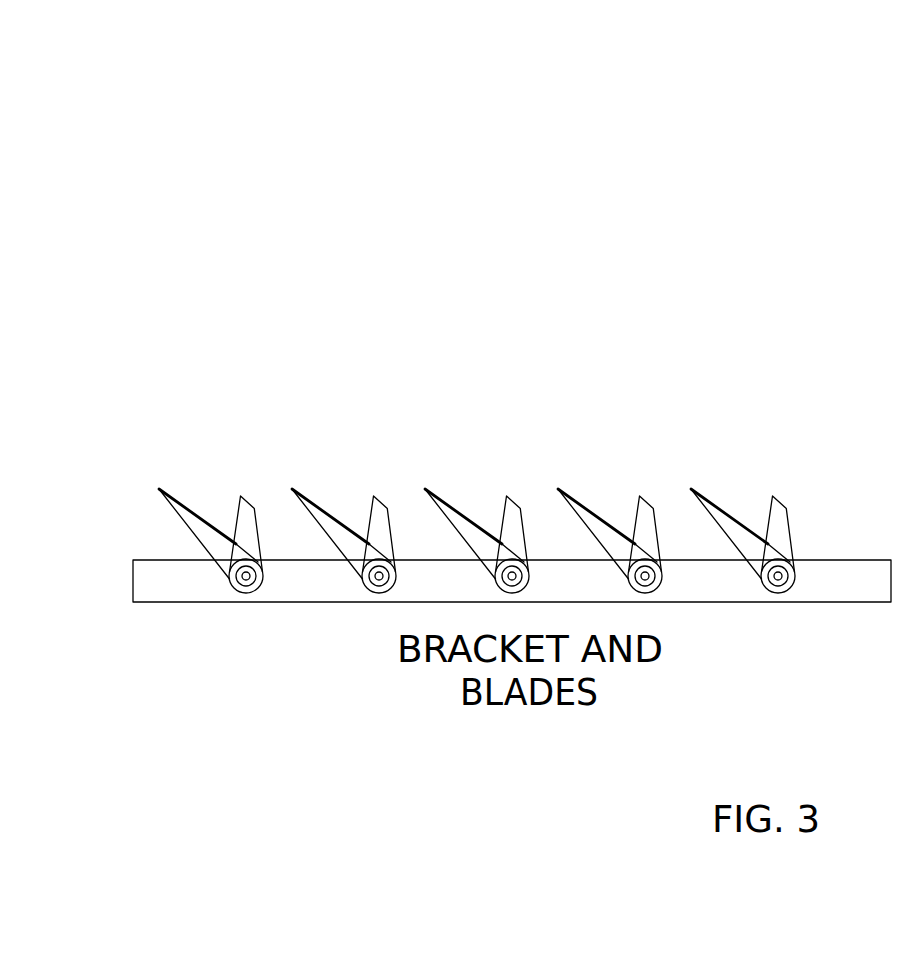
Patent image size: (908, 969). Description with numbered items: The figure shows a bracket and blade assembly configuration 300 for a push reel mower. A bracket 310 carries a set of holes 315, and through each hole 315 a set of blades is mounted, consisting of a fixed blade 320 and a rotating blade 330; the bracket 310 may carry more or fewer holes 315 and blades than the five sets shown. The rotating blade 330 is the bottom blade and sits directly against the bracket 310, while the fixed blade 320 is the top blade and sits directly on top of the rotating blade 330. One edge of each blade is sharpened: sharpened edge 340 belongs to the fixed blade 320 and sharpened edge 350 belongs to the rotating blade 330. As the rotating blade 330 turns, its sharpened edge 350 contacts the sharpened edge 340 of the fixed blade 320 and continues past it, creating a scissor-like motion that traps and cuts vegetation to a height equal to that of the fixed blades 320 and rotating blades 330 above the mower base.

The bracket and blade assembly configuration 300 is at (769, 163).
The bracket 310 is at (181, 600).
The hole 315 is at (249, 581).
The fixed blade 320 is at (186, 499).
The rotating blade 330 is at (652, 495).
The sharpened edge 340 is at (210, 515).
The sharpened edge 350 is at (630, 513).